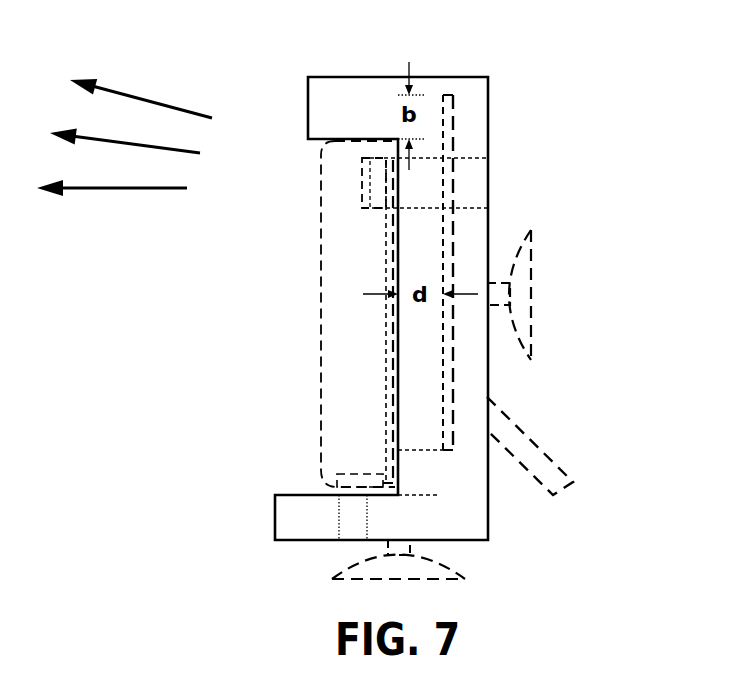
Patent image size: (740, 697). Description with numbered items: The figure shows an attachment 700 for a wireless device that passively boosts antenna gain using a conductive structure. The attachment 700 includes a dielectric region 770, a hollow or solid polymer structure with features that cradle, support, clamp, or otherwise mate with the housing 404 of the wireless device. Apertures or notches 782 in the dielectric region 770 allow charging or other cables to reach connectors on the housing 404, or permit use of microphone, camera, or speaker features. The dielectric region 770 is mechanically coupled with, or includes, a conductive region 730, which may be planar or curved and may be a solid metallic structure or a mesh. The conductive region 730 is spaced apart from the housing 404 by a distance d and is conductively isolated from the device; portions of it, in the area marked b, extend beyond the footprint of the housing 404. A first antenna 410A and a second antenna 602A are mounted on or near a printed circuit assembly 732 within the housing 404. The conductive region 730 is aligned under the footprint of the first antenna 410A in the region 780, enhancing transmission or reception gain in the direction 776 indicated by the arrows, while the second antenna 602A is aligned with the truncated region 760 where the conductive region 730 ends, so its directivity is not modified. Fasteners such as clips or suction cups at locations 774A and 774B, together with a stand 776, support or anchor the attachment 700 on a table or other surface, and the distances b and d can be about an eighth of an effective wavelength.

The attachment 700 is at (571, 120).
The conductive region 730 is at (453, 95).
The dielectric region 770 is at (487, 245).
The region 780 is at (496, 158).
The housing 404 is at (321, 207).
The first antenna 410A is at (375, 208).
The printed circuit assembly 732 is at (385, 243).
The second antenna 602A is at (354, 478).
The apertures or notches 782 is at (350, 527).
The truncated region 760 is at (443, 450).
The fastener location 774A is at (531, 300).
The fastener location 774B is at (457, 565).
The stand 776 is at (525, 433).